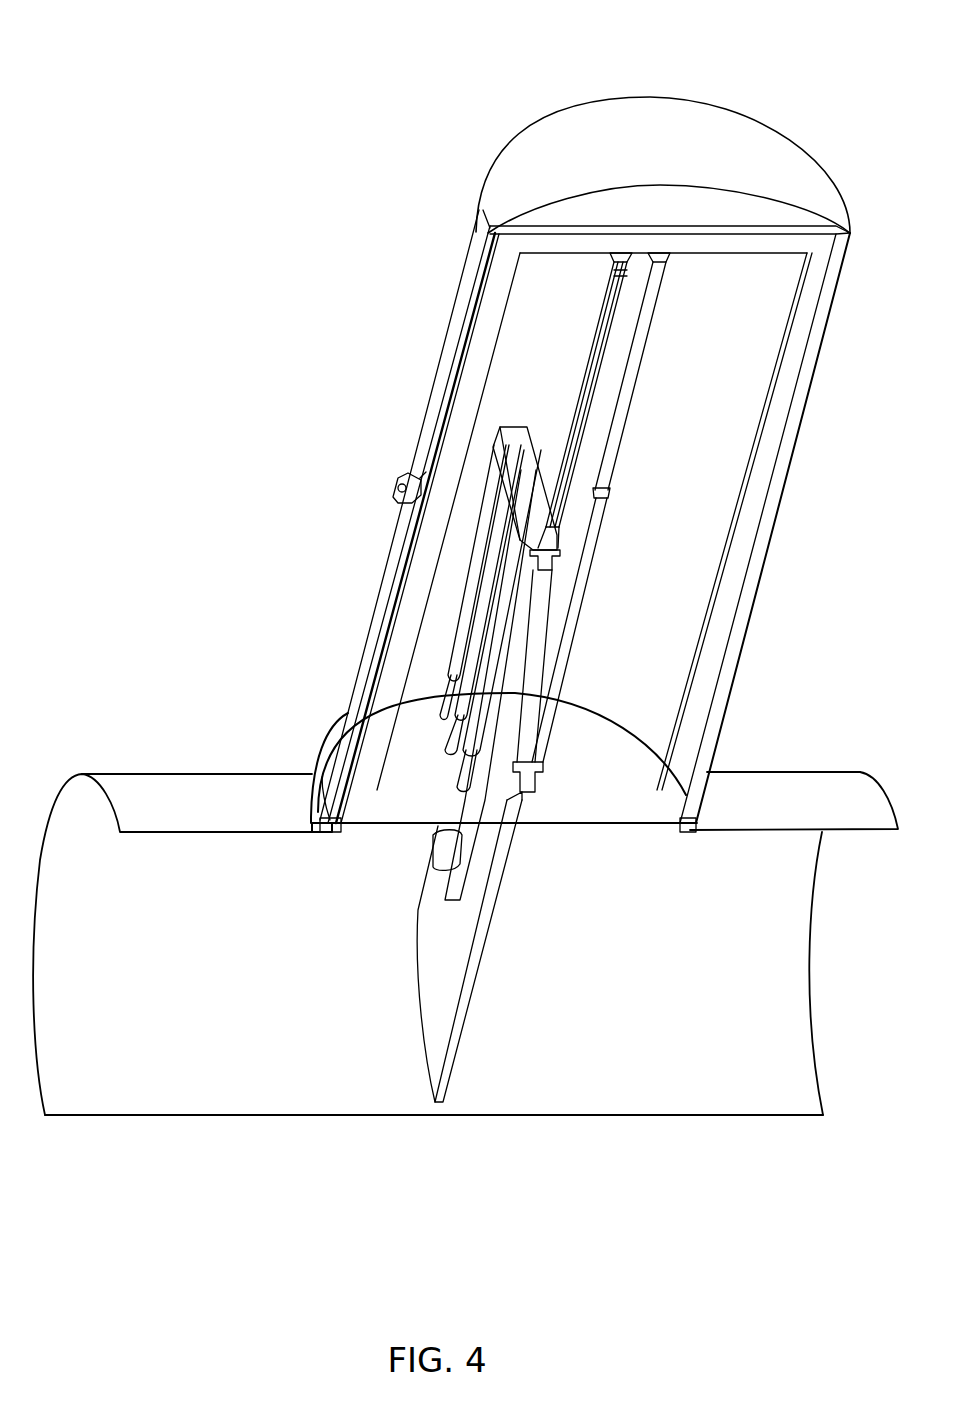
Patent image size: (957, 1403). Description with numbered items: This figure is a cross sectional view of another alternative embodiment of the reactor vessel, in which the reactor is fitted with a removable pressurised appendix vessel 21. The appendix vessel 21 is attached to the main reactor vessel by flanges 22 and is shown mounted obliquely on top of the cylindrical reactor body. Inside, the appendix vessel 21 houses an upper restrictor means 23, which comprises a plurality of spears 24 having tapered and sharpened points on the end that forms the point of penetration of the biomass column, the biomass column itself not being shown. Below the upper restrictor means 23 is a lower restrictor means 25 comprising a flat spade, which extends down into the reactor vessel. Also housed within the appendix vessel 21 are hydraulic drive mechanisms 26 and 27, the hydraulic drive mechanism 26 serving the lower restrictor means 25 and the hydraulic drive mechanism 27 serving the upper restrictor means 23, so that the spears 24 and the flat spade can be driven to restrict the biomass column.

The appendix vessel 21 is at (720, 145).
The flanges 22 is at (317, 798).
The upper restrictor means 23 is at (517, 440).
The spears 24 is at (473, 603).
The lower restrictor means 25 is at (523, 780).
The hydraulic drive mechanism 26 is at (635, 352).
The hydraulic drive mechanism 27 is at (603, 345).